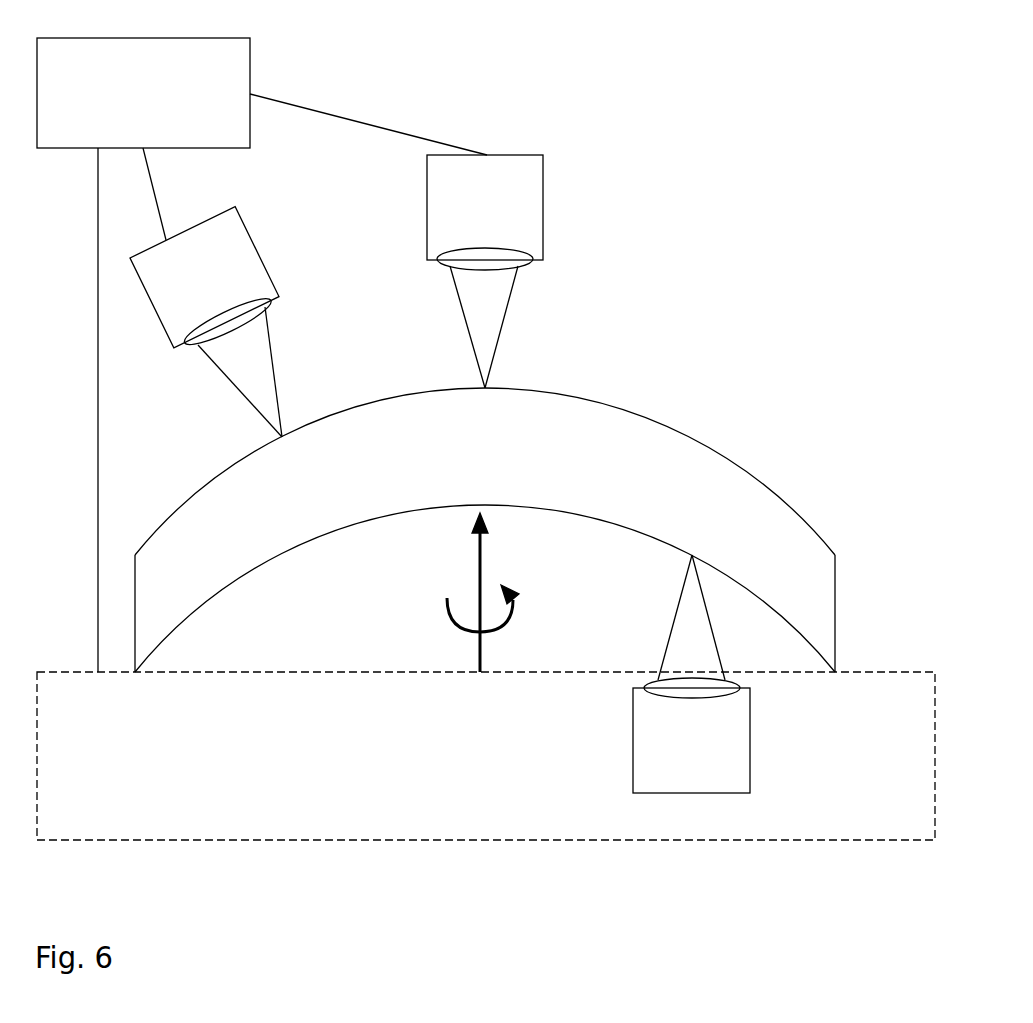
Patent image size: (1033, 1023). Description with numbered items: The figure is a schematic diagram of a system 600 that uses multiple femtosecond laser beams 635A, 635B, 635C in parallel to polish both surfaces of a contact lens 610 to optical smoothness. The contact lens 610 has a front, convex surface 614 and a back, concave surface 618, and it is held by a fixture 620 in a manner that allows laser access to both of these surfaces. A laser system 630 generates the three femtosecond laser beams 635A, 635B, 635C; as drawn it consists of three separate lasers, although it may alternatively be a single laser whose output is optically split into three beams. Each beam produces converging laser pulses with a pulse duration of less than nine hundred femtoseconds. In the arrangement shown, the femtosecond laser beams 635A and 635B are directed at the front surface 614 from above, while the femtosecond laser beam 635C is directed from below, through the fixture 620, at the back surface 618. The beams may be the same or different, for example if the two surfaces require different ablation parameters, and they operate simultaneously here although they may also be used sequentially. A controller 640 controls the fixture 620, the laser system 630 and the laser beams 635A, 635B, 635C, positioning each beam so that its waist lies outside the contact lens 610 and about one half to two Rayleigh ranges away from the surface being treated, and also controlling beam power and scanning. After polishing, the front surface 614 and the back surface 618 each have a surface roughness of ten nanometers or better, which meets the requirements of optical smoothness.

The system 600 is at (468, 21).
The contact lens 610 is at (501, 525).
The front surface 614 is at (687, 435).
The back surface 618 is at (653, 538).
The fixture 620 is at (486, 676).
The laser system 630 is at (440, 474).
The femtosecond laser beam 635A is at (248, 370).
The femtosecond laser beam 635B is at (488, 322).
The femtosecond laser beam 635C is at (688, 632).
The controller 640 is at (262, 355).